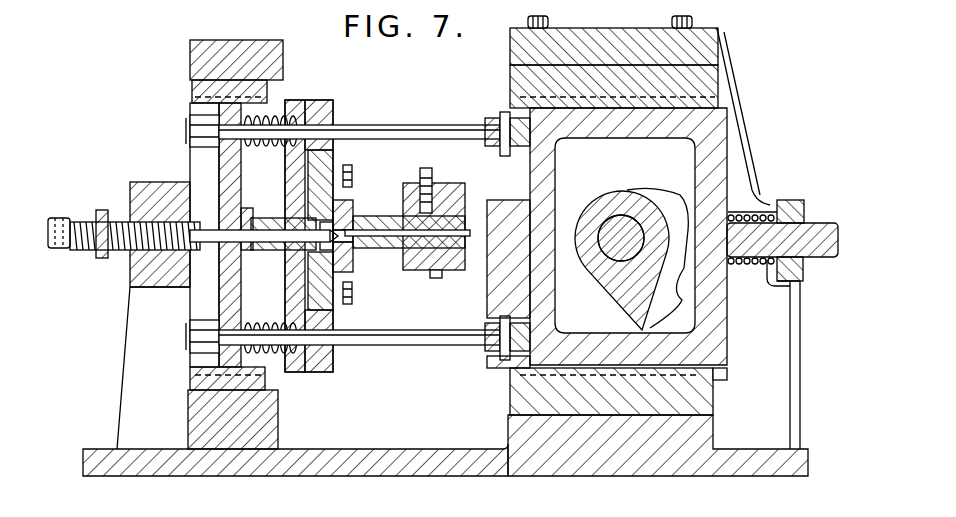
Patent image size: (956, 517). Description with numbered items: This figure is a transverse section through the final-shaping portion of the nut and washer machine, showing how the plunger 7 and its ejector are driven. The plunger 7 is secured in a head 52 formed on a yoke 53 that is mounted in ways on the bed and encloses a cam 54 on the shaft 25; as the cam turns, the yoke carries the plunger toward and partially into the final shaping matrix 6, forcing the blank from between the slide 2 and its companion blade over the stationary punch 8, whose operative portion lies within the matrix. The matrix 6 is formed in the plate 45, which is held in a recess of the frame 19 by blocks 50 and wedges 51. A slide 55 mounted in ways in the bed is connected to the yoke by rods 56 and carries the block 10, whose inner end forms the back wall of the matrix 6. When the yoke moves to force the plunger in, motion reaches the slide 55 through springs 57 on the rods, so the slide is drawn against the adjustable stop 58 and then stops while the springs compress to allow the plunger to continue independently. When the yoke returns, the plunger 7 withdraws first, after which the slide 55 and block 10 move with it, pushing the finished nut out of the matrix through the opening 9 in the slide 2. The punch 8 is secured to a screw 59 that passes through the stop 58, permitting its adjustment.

The slide 2 is at (340, 256).
The final shaping matrix 6 is at (330, 226).
The plunger 7 is at (383, 250).
The stationary punch 8 is at (210, 250).
The opening 9 is at (343, 244).
The block 10 is at (268, 220).
The frame 19 is at (335, 103).
The shaft 25 is at (620, 222).
The plate 45 is at (345, 202).
The blocks 50 is at (352, 172).
The wedges 51 is at (322, 154).
The head 52 is at (432, 273).
The yoke 53 is at (718, 318).
The cam 54 is at (618, 308).
The slide 55 is at (222, 158).
The rods 56 is at (455, 125).
The springs 57 is at (272, 145).
The adjustable stop 58 is at (202, 217).
The screw 59 is at (67, 252).